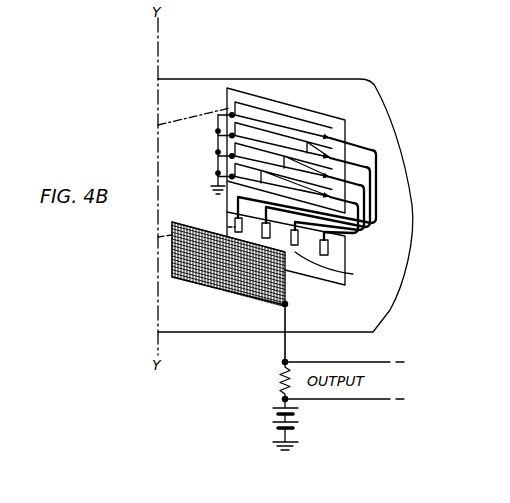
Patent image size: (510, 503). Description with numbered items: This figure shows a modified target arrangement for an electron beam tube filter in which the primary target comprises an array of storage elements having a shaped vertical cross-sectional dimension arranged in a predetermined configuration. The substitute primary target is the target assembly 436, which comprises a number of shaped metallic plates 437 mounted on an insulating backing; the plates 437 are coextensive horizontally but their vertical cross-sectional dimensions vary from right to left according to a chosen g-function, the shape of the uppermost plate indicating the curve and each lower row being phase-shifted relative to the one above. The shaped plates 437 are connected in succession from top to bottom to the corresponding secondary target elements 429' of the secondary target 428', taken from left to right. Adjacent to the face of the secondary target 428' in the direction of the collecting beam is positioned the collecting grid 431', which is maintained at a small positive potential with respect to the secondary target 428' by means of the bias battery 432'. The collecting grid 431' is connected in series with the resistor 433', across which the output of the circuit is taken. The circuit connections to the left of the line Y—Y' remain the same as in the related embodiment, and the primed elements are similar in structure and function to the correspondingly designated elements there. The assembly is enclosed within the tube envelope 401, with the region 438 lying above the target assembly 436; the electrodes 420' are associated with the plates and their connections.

The cathode ray tube envelope 401 is at (362, 79).
The deflection region 438 is at (281, 55).
The target assembly 436 is at (312, 110).
The deflection electrodes 420' is at (312, 181).
The shaped metallic plates 437 is at (217, 152).
The secondary target 428' is at (286, 260).
The secondary target elements 429' is at (342, 269).
The collecting grid 431' is at (201, 292).
The resistor 433' is at (259, 380).
The bias battery 432' is at (257, 424).